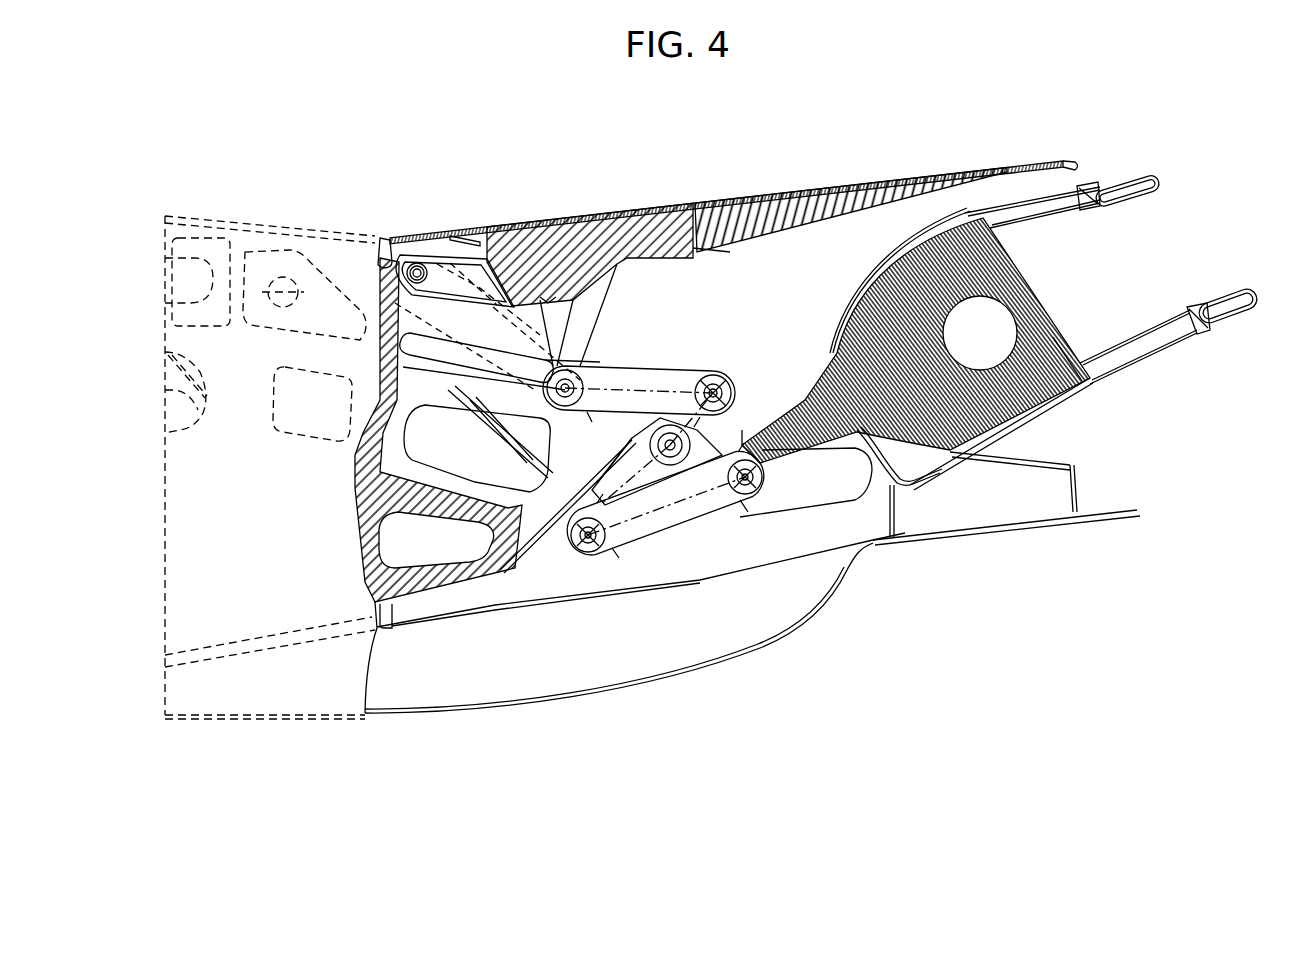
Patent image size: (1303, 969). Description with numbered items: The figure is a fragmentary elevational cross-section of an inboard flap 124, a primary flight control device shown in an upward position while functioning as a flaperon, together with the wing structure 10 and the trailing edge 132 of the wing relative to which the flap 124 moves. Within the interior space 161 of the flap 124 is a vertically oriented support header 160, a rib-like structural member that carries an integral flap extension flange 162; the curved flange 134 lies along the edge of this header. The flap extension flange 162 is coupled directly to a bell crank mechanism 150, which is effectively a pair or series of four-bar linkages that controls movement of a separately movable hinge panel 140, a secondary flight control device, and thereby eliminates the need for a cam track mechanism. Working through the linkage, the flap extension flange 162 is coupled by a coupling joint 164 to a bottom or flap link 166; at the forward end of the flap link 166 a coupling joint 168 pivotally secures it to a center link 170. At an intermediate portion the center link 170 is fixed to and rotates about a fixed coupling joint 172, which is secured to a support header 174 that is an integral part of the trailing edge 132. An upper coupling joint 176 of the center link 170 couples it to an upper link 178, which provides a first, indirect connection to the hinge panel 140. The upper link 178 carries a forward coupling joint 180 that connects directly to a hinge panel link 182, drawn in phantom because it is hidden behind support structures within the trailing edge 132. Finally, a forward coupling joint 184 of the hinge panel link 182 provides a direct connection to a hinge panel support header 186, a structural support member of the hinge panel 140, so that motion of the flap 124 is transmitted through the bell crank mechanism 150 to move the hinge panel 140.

The aircraft fuselage structure 10 is at (283, 200).
The inboard flap 124 is at (1093, 183).
The trailing edge 132 is at (413, 248).
The curved flange 134 is at (840, 322).
The hinge panel 140 is at (905, 180).
The bell crank mechanism 150 is at (702, 328).
The support header 160 is at (992, 277).
The interior space 161 is at (913, 460).
The flap extension flange 162 is at (832, 370).
The coupling joint 164 is at (773, 517).
The flap link 166 is at (633, 543).
The coupling joint 168 is at (580, 555).
The center link 170 is at (617, 487).
The fixed coupling joint 172 is at (650, 426).
The support header 174 is at (403, 414).
The upper coupling joint 176 is at (715, 375).
The upper link 178 is at (620, 365).
The forward coupling joint 180 is at (546, 455).
The hinge panel link 182 is at (488, 258).
The forward coupling joint 184 is at (393, 250).
The hinge panel support header 186 is at (608, 205).